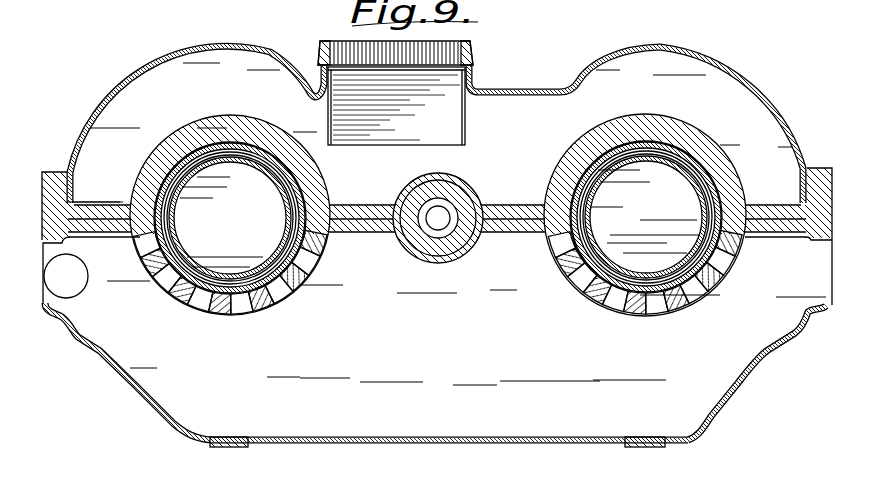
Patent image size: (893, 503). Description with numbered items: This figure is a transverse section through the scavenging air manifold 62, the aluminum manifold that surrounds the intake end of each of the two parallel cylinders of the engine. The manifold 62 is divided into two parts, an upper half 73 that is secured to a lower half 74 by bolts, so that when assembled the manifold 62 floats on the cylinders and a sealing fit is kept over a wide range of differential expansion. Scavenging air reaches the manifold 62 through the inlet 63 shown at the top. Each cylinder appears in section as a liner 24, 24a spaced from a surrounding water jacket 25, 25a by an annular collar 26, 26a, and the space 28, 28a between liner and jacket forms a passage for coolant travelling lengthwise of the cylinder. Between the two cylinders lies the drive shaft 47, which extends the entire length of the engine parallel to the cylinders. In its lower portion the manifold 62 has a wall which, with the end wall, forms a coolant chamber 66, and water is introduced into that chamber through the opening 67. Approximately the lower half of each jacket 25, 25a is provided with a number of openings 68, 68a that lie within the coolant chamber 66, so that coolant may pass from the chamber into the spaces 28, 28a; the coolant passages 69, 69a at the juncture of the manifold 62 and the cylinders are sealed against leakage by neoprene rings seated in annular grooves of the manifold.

The scavenging air manifold 62 is at (749, 65).
The upper half 73 is at (104, 101).
The lower half 74 is at (160, 416).
The coolant chamber 66 is at (372, 431).
The opening 67 is at (80, 279).
The inlet 63 is at (452, 41).
The water jacket 25a is at (196, 149).
The space 28a is at (241, 145).
The liner 24a is at (266, 163).
The openings 68a is at (242, 248).
The coolant passages 69a is at (236, 313).
The annular collar 26a is at (299, 329).
The water jacket 25 is at (655, 142).
The space 28 is at (689, 159).
The liner 24 is at (690, 176).
The openings 68 is at (568, 270).
The coolant passages 69 is at (603, 284).
The annular collar 26 is at (694, 290).
The drive shaft 47 is at (421, 194).